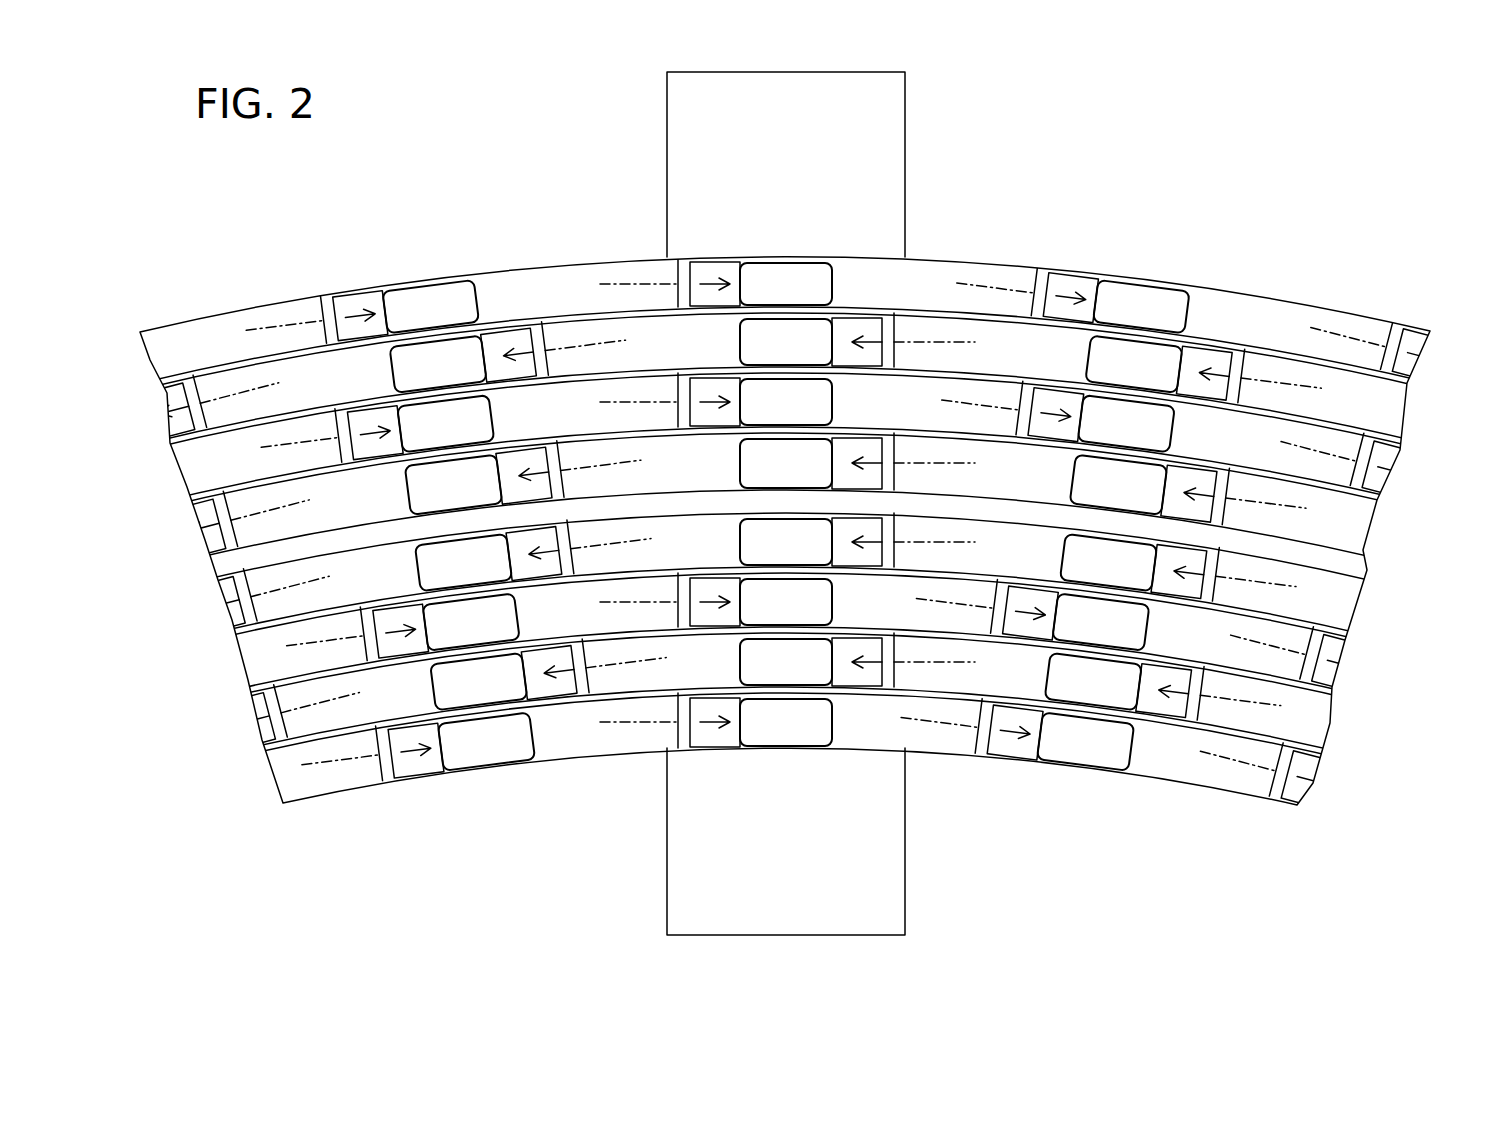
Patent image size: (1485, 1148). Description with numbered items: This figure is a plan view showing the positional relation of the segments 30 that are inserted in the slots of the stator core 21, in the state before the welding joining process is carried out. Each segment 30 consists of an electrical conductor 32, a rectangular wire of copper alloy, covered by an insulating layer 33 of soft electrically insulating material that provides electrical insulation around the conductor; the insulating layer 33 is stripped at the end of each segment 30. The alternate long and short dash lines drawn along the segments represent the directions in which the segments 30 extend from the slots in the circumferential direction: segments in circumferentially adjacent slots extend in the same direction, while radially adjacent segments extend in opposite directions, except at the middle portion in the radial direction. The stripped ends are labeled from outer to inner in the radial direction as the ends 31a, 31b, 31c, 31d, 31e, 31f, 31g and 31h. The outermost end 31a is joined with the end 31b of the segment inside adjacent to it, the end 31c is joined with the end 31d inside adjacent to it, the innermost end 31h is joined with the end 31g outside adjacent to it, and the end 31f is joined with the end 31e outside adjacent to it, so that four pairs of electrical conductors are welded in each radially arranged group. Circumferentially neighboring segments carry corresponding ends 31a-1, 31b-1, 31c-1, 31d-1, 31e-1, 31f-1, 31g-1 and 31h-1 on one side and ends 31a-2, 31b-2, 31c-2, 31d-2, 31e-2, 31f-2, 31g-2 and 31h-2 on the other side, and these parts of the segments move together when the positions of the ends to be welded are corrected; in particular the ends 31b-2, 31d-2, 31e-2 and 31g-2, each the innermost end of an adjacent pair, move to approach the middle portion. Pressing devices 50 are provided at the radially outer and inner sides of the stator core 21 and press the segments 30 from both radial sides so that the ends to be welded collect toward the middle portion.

The stator core 21 is at (1215, 282).
The segment 30 is at (232, 453).
The electrical conductor 32 is at (345, 430).
The insulating layer 33 is at (173, 355).
The pressing device 50 is at (890, 117).
The end 31a is at (833, 287).
The end 31a-1 is at (1187, 317).
The end 31a-2 is at (478, 296).
The end 31b is at (740, 340).
The end 31b-1 is at (1088, 355).
The end 31b-2 is at (394, 374).
The end 31c is at (833, 407).
The end 31c-1 is at (1174, 433).
The end 31c-2 is at (494, 410).
The end 31d is at (740, 462).
The end 31d-1 is at (1072, 472).
The end 31d-2 is at (406, 494).
The end 31e is at (740, 542).
The end 31e-1 is at (1063, 551).
The end 31e-2 is at (416, 571).
The end 31f is at (833, 605).
The end 31f-1 is at (1148, 638).
The end 31f-2 is at (518, 607).
The end 31g is at (740, 662).
The end 31g-1 is at (1048, 666).
The end 31g-2 is at (432, 691).
The end 31h is at (833, 723).
The end 31h-1 is at (1133, 757).
The end 31h-2 is at (533, 724).